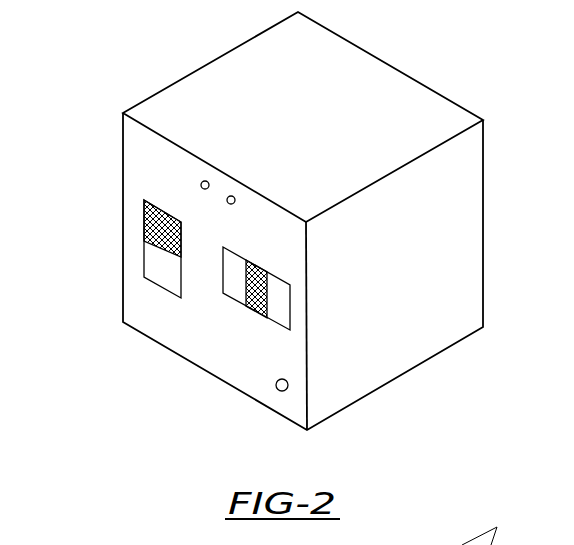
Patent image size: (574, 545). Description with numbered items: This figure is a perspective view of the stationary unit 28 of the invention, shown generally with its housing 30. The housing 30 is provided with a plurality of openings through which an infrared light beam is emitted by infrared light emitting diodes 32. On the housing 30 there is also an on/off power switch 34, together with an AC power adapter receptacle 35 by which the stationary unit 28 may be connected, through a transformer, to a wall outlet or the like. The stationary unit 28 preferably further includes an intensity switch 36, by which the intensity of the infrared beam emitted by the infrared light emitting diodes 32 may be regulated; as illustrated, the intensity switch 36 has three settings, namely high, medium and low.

The stationary unit 28 is at (102, 106).
The housing 30 is at (398, 240).
The infrared light emitting diodes 32 is at (231, 196).
The on/off power switch 34 is at (147, 227).
The AC power adapter receptacle 35 is at (282, 391).
The intensity switch 36 is at (234, 268).